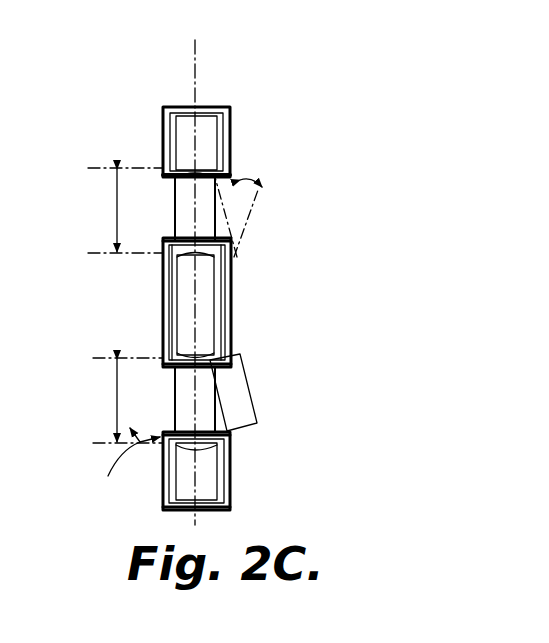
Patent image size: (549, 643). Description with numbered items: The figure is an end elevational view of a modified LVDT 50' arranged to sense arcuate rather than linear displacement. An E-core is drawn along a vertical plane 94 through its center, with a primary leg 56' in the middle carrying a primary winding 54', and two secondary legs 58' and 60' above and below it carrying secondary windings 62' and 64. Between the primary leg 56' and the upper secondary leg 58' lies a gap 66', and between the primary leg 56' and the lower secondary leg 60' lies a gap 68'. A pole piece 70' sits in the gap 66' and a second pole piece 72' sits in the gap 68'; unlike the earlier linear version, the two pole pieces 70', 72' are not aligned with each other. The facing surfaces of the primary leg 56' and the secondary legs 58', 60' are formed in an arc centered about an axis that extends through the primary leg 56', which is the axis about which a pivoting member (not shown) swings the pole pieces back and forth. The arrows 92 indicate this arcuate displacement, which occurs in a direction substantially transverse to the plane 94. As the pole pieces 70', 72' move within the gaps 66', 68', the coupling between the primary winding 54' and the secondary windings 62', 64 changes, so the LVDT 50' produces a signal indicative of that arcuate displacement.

The plane 94 is at (195, 58).
The gap 66' is at (106, 210).
The gap 68' is at (105, 400).
The modified LVDT 50' is at (95, 335).
The secondary winding 62' is at (228, 131).
The secondary leg 58' is at (252, 183).
The arrows 92 is at (268, 185).
The pole piece 70' is at (267, 223).
The primary winding 54' is at (241, 302).
The primary leg 56' is at (242, 305).
The pole piece 72' is at (225, 393).
The secondary leg 60' is at (241, 471).
The secondary winding 64 is at (232, 495).